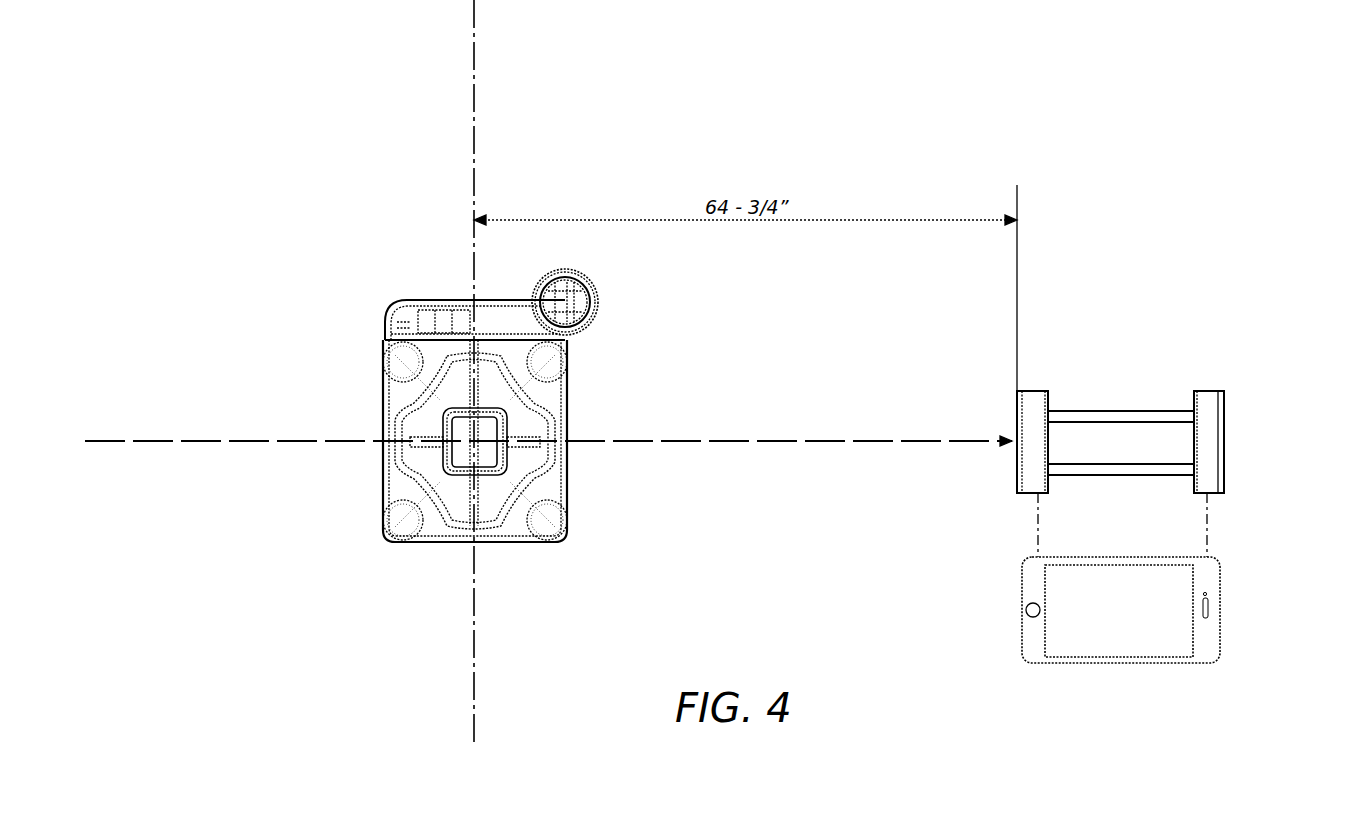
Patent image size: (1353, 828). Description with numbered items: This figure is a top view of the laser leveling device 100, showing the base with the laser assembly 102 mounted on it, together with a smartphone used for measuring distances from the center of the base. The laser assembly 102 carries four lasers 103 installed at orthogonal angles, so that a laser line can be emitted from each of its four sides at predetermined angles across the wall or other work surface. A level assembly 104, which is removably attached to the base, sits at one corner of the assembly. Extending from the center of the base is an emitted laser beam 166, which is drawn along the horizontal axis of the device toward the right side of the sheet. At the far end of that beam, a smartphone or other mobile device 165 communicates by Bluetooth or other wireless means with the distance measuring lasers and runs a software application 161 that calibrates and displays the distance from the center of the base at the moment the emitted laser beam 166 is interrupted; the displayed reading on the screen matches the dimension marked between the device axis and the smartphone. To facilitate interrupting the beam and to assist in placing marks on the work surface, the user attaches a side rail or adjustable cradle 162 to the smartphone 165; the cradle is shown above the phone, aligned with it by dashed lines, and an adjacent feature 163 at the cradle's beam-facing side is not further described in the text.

The laser leveling device 100 is at (343, 287).
The laser assembly 102 is at (556, 407).
The lasers 103 is at (478, 366).
The level assembly 104 is at (598, 286).
The software application 161 is at (1142, 638).
The adjustable cradle 162 is at (1208, 398).
The reference surface 163 is at (1012, 447).
The smartphone 165 is at (1168, 627).
The emitted laser beam 166 is at (782, 441).